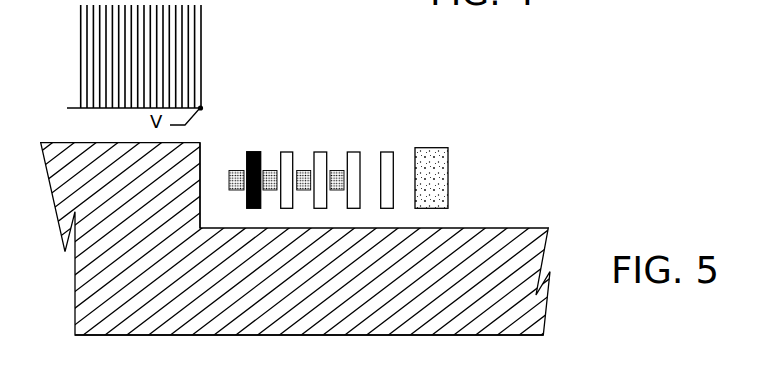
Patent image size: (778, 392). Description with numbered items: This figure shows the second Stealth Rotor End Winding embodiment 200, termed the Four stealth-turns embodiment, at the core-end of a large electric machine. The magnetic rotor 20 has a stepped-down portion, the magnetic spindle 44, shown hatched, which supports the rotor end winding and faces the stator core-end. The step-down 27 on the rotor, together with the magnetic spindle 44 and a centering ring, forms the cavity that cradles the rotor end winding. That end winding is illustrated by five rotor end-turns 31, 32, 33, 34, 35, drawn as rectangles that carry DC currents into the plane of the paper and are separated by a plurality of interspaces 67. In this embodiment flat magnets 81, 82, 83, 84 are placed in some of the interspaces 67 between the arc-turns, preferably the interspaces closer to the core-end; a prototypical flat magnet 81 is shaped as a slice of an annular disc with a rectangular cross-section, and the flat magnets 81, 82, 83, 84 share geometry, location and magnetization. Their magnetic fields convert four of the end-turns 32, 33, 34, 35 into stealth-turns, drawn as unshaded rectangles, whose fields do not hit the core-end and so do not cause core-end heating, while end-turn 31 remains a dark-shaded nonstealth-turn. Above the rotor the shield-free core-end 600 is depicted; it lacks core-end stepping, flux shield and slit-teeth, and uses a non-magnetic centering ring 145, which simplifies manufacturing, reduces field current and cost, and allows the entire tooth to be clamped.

The magnetic rotor 20 is at (389, 196).
The step-down 27 is at (256, 153).
The rotor end-turn 31 is at (254, 169).
The rotor end-turn 32 is at (288, 169).
The rotor end-turn 33 is at (321, 169).
The rotor end-turn 34 is at (355, 169).
The rotor end-turn 35 is at (388, 169).
The magnetic spindle 44 is at (309, 349).
The interspaces 67 is at (398, 119).
The flat magnet 81 is at (236, 190).
The flat magnet 82 is at (270, 190).
The flat magnet 83 is at (304, 190).
The flat magnet 84 is at (337, 190).
The non-magnetic centering ring 145 is at (437, 178).
The second Stealth Rotor End Winding embodiment 200 is at (500, 110).
The shield-free core-end 600 is at (62, 82).